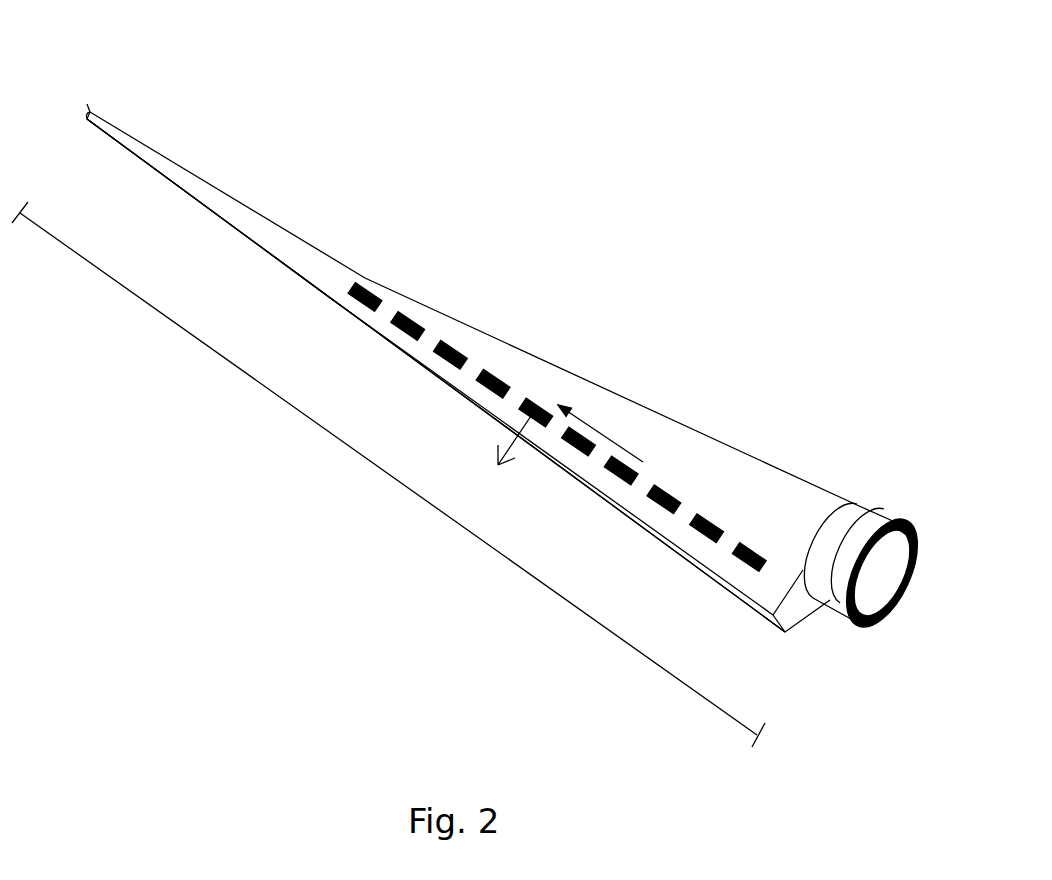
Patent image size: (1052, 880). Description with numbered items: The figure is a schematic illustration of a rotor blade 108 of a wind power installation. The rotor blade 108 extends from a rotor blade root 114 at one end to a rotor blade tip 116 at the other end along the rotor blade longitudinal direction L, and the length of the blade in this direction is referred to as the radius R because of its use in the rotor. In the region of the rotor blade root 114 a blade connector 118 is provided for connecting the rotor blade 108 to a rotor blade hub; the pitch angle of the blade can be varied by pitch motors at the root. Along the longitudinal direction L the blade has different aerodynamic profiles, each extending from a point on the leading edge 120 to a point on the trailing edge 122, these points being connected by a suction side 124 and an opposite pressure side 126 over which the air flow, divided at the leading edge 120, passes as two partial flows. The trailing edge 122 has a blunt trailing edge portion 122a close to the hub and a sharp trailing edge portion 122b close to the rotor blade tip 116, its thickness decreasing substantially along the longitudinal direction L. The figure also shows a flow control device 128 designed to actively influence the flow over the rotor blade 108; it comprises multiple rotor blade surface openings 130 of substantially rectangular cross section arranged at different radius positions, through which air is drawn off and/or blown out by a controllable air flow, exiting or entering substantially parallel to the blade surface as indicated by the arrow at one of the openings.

The rotor blade 108 is at (640, 194).
The rotor blade root 114 is at (886, 510).
The rotor blade tip 116 is at (87, 103).
The blade connector 118 is at (913, 575).
The leading edge 120 is at (517, 347).
The trailing edge 122 is at (453, 387).
The blunt trailing edge portion 122a is at (590, 487).
The sharp trailing edge portion 122b is at (245, 233).
The suction side 124 is at (750, 495).
The pressure side 126 is at (698, 585).
The flow control device 128 is at (445, 281).
The rotor blade surface openings 130 is at (368, 283).
The radius R is at (285, 400).
The rotor blade longitudinal direction L is at (600, 430).